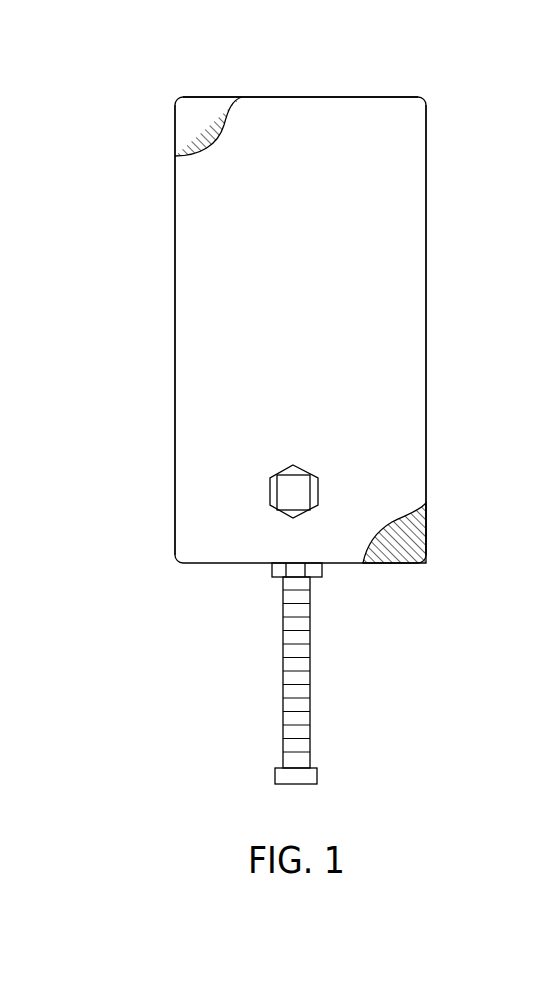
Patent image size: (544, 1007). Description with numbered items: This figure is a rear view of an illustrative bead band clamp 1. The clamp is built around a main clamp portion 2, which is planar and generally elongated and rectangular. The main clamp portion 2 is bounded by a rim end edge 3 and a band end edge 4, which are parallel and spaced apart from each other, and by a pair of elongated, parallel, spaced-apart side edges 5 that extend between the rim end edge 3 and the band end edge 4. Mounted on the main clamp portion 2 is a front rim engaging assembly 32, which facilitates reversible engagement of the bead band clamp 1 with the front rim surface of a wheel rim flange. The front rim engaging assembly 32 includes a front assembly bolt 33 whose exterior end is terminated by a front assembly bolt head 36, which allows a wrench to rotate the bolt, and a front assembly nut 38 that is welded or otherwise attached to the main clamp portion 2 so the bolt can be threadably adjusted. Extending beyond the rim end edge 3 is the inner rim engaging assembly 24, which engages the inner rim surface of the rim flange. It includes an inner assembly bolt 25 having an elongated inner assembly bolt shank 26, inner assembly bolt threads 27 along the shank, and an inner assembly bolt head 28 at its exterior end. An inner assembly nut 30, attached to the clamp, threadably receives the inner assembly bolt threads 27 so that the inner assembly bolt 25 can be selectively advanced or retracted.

The bead band clamp 1 is at (155, 58).
The main clamp portion 2 is at (445, 320).
The rim end edge 3 is at (345, 563).
The band end edge 4 is at (300, 97).
The side edges 5 is at (175, 192).
The inner rim engaging assembly 24 is at (253, 629).
The inner assembly bolt 25 is at (318, 716).
The inner assembly bolt shank 26 is at (310, 625).
The inner assembly bolt threads 27 is at (283, 722).
The inner assembly bolt head 28 is at (275, 778).
The inner assembly nut 30 is at (272, 569).
The front rim engaging assembly 32 is at (272, 456).
The front assembly bolt 33 is at (300, 468).
The front assembly bolt head 36 is at (271, 497).
The front assembly nut 38 is at (272, 488).